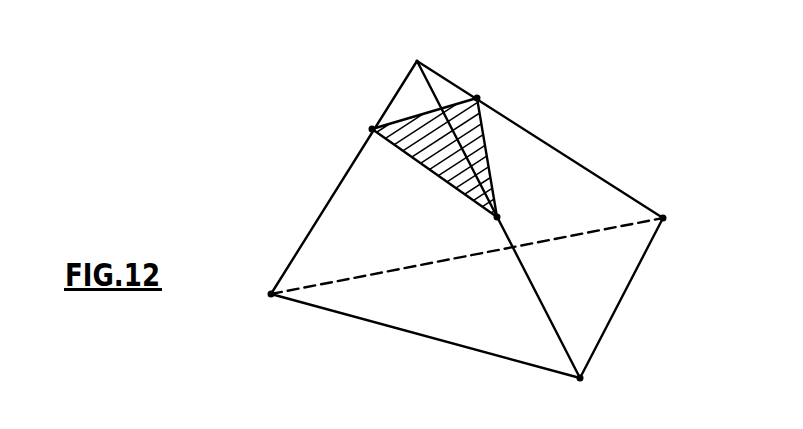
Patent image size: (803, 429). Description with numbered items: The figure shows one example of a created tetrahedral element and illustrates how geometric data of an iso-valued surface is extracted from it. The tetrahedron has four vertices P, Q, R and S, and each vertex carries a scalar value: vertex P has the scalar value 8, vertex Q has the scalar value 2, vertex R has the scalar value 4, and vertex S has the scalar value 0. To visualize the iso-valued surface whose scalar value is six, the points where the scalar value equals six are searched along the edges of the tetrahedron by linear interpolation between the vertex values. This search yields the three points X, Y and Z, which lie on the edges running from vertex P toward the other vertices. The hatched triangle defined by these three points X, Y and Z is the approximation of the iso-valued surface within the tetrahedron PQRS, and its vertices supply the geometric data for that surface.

The scalar value of vertex P 8 is at (416, 46).
The scalar value of vertex Q 2 is at (247, 294).
The scalar value of vertex R 4 is at (579, 394).
The scalar value of vertex S 0 is at (685, 222).
The point X is at (359, 130).
The point Y is at (509, 218).
The point Z is at (489, 94).